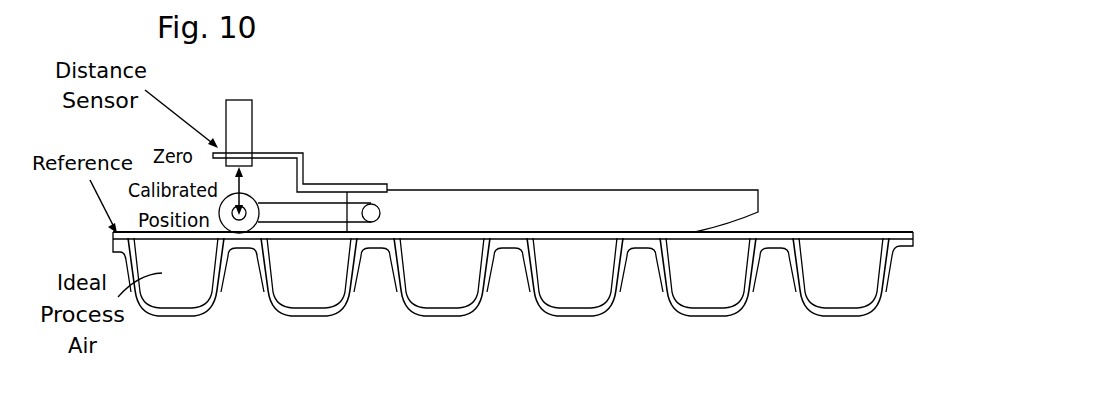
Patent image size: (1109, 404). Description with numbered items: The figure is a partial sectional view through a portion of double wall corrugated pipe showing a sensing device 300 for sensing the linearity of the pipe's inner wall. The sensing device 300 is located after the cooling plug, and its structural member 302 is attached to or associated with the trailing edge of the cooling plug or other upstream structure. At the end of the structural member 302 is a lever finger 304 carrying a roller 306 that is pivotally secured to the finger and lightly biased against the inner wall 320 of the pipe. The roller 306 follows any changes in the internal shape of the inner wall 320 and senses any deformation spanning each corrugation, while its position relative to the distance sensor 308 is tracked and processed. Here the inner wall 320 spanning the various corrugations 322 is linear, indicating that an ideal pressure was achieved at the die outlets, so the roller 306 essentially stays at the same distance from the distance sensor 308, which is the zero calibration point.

The sensing device 300 is at (582, 148).
The structural member 302 is at (620, 203).
The lever finger 304 is at (322, 213).
The roller 306 is at (250, 197).
The distance sensor 308 is at (247, 120).
The inner wall 320 is at (302, 239).
The corrugations 322 is at (348, 311).